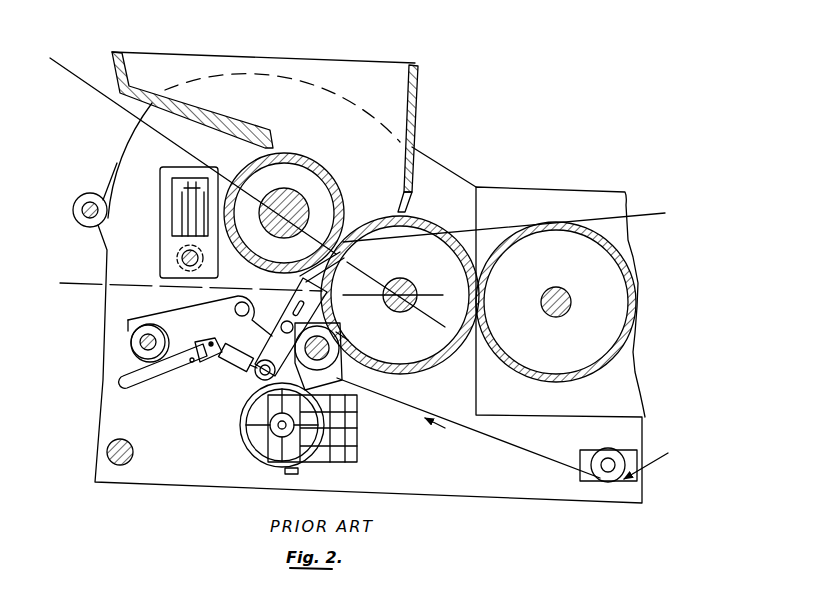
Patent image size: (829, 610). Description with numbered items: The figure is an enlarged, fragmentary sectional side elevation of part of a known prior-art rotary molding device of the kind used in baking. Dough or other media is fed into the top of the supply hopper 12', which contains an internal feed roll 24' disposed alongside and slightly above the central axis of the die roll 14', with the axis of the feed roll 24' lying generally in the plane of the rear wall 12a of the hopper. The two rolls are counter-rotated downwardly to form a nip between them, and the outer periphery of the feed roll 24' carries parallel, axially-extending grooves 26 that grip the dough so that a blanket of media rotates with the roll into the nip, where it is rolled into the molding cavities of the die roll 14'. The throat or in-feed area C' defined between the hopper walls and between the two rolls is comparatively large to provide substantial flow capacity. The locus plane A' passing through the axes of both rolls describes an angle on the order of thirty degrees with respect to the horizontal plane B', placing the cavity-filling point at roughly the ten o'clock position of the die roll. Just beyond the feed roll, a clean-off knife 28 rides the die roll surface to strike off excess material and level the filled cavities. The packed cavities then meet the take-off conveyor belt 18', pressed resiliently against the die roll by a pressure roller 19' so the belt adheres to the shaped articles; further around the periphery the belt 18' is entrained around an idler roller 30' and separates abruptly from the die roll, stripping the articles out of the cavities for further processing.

The supply hopper 12' is at (265, 118).
The rear wall of the supply hopper 12a is at (167, 97).
The locus plane A' is at (193, 156).
The horizontal plane B' is at (179, 276).
The throat or in-feed area C' is at (371, 168).
The grooves 26 is at (246, 176).
The feed roll 24' is at (284, 196).
The die roll 14' is at (403, 257).
The clean-off knife 28 is at (328, 291).
The pressure roller 19' is at (355, 327).
The idler roller 30' is at (556, 302).
The take-off conveyor belt 18' is at (501, 321).